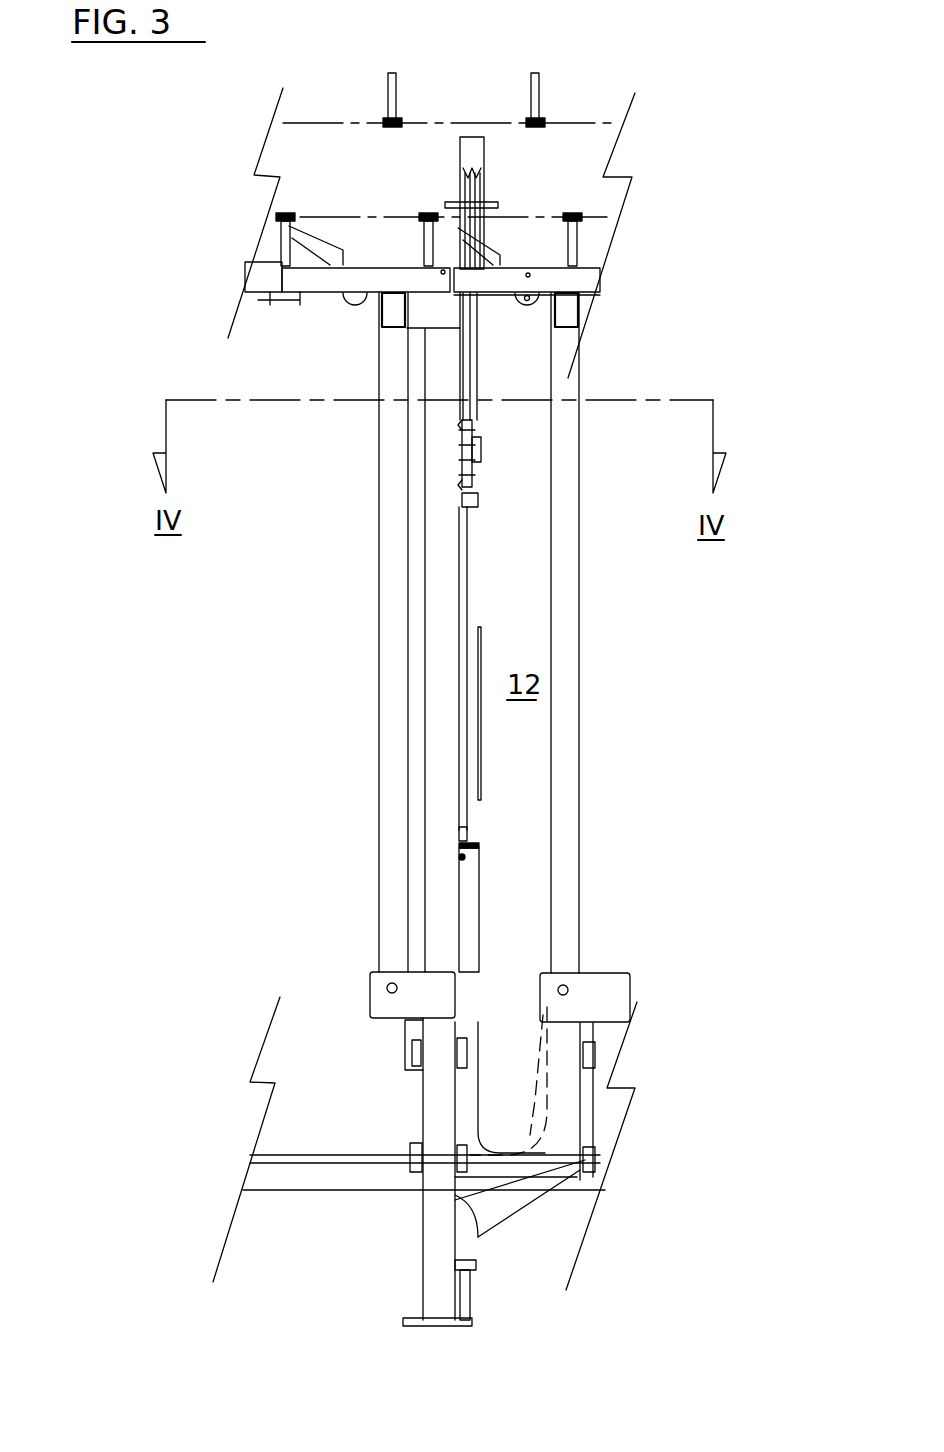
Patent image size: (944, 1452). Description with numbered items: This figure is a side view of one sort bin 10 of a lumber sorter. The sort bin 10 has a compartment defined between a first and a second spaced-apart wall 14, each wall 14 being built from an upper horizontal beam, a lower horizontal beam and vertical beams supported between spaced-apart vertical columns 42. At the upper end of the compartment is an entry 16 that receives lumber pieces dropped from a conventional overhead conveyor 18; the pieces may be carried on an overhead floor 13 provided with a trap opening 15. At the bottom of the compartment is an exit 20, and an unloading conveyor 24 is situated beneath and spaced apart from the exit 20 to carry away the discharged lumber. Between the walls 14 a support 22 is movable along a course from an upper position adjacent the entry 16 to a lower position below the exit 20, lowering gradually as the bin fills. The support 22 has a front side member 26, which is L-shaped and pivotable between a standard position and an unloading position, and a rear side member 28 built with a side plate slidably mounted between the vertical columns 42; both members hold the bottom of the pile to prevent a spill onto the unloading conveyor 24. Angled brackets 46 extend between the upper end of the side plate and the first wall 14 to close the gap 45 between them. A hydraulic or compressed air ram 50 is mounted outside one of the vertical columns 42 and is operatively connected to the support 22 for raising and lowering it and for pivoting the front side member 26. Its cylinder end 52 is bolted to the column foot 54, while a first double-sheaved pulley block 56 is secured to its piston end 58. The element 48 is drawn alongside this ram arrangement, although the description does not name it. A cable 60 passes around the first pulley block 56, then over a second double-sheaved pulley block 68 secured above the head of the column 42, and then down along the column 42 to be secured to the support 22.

The sort bin 10 is at (672, 364).
The overhead floor 13 is at (587, 280).
The wall 14 is at (393, 590).
The trap opening 15 is at (318, 240).
The entry 16 is at (494, 305).
The overhead conveyor 18 is at (430, 115).
The exit 20 is at (503, 1016).
The support 22 is at (398, 1118).
The unloading conveyor 24 is at (273, 1182).
The front side member 26 is at (525, 1206).
The rear side member 28 is at (422, 1093).
The vertical column 42 is at (433, 533).
The gap 45 is at (412, 702).
The angled bracket 46 is at (413, 1030).
The drive shaft assembly 48 is at (500, 550).
The ram 50 is at (480, 900).
The cylinder end 52 is at (470, 1264).
The column foot 54 is at (468, 1302).
The first double-sheaved pulley block 56 is at (483, 452).
The piston end 58 is at (470, 505).
The cable 60 is at (480, 737).
The second double-sheaved pulley block 68 is at (471, 150).